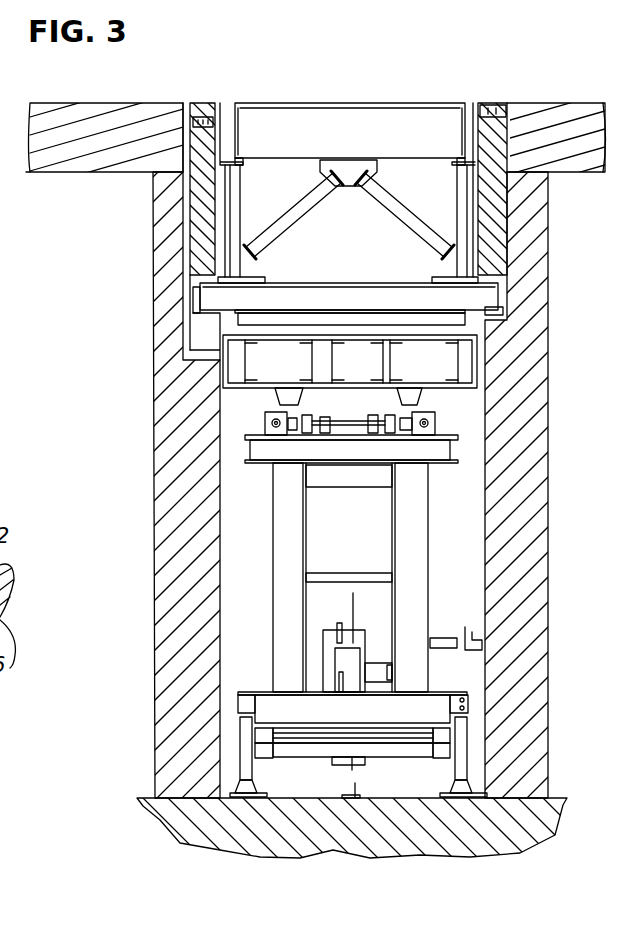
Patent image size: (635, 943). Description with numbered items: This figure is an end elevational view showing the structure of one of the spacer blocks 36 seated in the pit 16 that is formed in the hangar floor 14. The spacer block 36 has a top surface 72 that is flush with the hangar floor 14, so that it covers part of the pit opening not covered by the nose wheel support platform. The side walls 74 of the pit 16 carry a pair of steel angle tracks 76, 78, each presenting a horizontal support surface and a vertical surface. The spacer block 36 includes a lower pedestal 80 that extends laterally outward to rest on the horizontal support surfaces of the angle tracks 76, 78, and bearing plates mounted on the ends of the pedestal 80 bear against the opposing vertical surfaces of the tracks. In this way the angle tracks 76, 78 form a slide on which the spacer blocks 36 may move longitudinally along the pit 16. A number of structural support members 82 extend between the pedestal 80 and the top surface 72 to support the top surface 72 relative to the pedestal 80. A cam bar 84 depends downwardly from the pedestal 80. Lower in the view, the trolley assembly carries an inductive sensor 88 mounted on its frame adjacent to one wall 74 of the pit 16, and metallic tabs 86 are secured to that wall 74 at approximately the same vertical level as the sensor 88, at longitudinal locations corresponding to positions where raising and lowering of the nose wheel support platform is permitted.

The hangar floor 14 is at (92, 102).
The pit 16 is at (245, 605).
The spacer block 36 is at (356, 130).
The top surface 72 is at (255, 101).
The side wall 74 is at (533, 430).
The steel angle track 76 is at (195, 345).
The steel angle track 78 is at (492, 317).
The lower pedestal 80 is at (200, 284).
The structural support member 82 is at (398, 212).
The cam bar 84 is at (275, 322).
The metallic tab 86 is at (470, 640).
The inductive sensor 88 is at (438, 638).